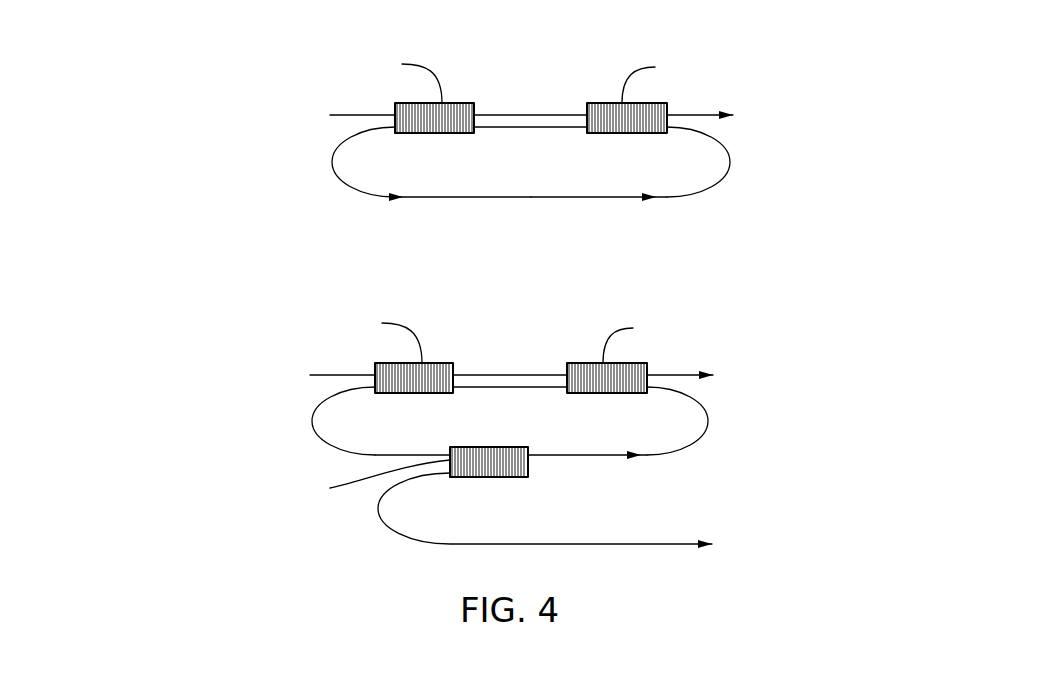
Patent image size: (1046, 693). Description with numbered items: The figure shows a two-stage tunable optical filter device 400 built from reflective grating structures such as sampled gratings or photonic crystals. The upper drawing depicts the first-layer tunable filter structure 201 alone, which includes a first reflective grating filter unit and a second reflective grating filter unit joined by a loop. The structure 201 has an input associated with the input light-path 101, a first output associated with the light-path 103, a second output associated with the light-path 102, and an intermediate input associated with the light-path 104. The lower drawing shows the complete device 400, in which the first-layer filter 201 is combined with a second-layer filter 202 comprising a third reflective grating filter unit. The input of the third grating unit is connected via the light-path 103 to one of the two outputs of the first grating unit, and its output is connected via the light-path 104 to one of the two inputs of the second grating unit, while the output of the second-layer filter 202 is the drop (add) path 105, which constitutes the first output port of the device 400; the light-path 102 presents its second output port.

The input light-path 101 is at (339, 114).
The light-path (second output) 102 is at (723, 245).
The light-path (first output) 103 is at (453, 311).
The light-path (intermediate input) 104 is at (597, 313).
The drop (add) path 105 is at (545, 510).
The tunable filter structure 201 is at (492, 256).
The tunable frequency selective optical unit 202 is at (575, 473).
The tunable filter device 400 is at (453, 425).